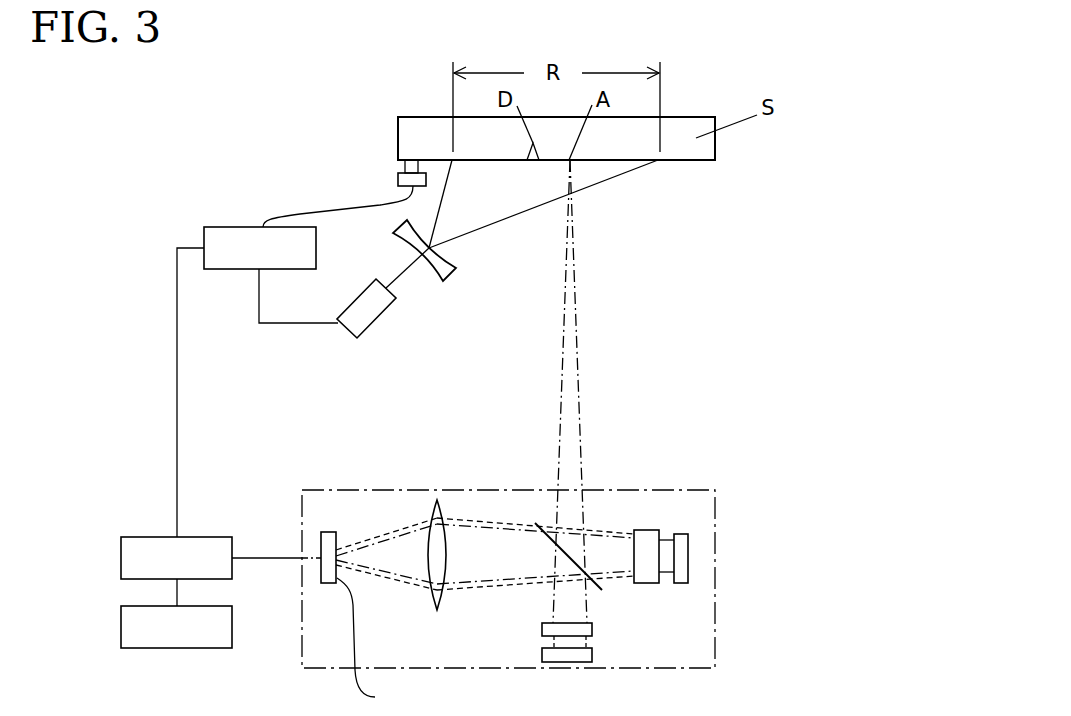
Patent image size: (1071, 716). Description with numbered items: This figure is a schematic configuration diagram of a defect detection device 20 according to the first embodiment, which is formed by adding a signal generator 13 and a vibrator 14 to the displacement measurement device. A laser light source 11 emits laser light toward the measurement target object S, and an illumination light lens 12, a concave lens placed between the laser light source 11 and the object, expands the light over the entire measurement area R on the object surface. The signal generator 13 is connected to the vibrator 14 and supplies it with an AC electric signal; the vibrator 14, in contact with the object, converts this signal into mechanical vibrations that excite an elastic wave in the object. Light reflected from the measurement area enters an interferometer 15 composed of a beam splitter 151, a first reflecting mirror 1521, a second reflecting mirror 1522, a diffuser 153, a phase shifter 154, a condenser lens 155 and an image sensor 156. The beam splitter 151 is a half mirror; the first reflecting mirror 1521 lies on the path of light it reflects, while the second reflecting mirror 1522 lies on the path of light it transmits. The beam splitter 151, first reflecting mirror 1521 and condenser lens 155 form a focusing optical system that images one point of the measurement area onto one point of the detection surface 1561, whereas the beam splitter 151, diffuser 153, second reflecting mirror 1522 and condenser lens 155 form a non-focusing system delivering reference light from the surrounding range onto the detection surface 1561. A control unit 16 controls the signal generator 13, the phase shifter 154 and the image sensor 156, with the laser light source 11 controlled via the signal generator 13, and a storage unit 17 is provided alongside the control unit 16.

The laser light source 11 is at (371, 312).
The illumination light lens 12 is at (440, 270).
The signal generator 13 is at (205, 227).
The vibrator 14 is at (398, 178).
The interferometer 15 is at (715, 490).
The control unit 16 is at (121, 538).
The storage unit 17 is at (121, 648).
The defect detection device 20 is at (770, 628).
The beam splitter 151 is at (535, 523).
The diffuser 153 is at (543, 630).
The phase shifter 154 is at (648, 532).
The condenser lens 155 is at (432, 515).
The image sensor 156 is at (328, 538).
The first reflecting mirror 1521 is at (688, 557).
The second reflecting mirror 1522 is at (578, 655).
The detection surface 1561 is at (381, 644).